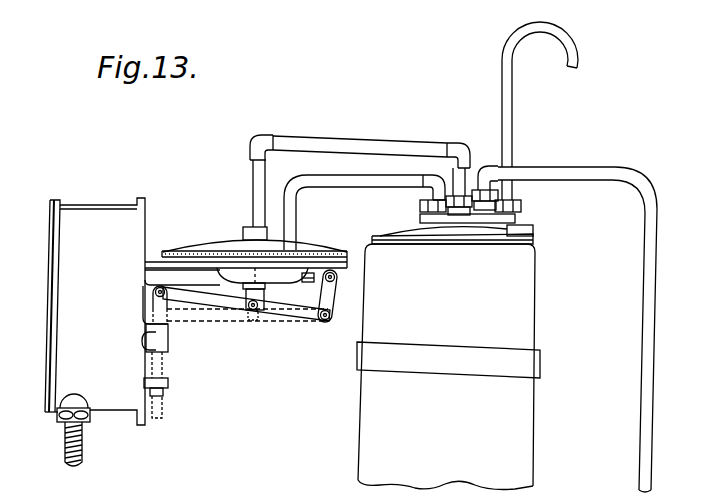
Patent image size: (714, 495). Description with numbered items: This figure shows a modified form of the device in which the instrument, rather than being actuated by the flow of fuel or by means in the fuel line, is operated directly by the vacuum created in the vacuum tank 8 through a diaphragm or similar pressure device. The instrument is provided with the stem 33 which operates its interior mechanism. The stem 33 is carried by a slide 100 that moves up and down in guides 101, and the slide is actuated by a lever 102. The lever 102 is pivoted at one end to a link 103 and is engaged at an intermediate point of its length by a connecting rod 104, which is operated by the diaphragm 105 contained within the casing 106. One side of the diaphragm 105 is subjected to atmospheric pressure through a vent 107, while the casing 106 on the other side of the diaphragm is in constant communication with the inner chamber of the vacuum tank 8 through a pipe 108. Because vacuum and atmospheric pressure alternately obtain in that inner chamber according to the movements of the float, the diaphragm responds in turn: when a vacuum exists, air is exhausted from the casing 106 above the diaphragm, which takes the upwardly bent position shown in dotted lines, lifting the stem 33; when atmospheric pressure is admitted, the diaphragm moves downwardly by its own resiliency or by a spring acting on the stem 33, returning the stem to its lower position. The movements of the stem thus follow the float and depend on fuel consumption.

The vacuum tank 8 is at (516, 316).
The stem 33 is at (146, 342).
The slide 100 is at (160, 366).
The guides 101 is at (168, 384).
The lever 102 is at (210, 299).
The link 103 is at (336, 298).
The connecting rod 104 is at (265, 311).
The diaphragm 105 is at (222, 253).
The casing 106 is at (310, 248).
The vent 107 is at (306, 313).
The pipe 108 is at (358, 146).